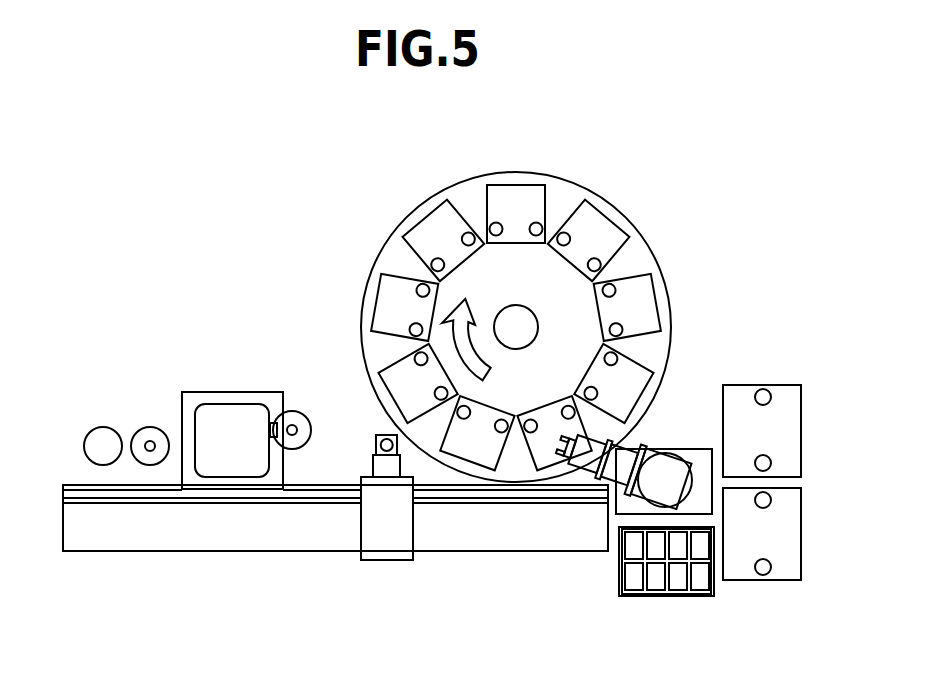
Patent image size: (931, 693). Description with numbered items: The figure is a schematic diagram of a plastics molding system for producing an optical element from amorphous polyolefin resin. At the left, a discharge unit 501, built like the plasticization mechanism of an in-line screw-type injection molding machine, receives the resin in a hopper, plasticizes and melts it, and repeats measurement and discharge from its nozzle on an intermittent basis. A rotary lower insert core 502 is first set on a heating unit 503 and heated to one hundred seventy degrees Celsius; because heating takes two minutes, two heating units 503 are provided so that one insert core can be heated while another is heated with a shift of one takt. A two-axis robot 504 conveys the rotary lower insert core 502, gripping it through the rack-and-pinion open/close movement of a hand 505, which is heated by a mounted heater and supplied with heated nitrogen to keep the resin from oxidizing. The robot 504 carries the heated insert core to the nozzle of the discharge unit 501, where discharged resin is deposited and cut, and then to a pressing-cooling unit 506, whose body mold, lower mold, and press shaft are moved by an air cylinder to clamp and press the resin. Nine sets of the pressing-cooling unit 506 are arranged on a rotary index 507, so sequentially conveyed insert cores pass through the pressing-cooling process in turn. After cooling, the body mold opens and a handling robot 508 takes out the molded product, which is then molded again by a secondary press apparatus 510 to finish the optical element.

The discharge unit 501 is at (236, 398).
The rotary lower insert core 502 is at (150, 452).
The heating unit 503 is at (149, 427).
The two-axis robot 504 is at (388, 548).
The hand 505 is at (374, 437).
The pressing-cooling unit 506 is at (475, 448).
The rotary index 507 is at (516, 366).
The handling robot 508 is at (662, 475).
The secondary press apparatus 510 is at (743, 565).